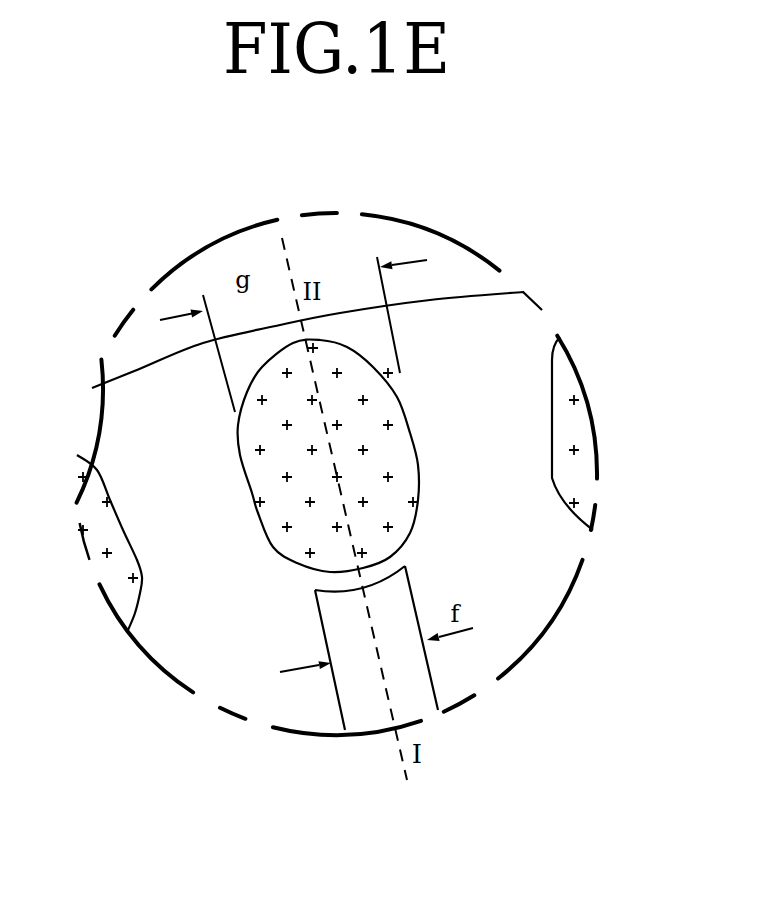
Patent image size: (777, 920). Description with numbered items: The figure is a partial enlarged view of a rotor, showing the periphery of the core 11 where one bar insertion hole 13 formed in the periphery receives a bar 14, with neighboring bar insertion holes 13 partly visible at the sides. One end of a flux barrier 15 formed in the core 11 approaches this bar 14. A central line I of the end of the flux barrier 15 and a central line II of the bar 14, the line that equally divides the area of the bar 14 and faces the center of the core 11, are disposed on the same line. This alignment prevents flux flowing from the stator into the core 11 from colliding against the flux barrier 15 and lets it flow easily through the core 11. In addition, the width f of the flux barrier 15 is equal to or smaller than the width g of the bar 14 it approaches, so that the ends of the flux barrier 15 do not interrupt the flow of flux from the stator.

The core 11 is at (463, 313).
The bar insertion hole 13 is at (252, 493).
The bar 14 is at (300, 532).
The flux barrier 15 is at (343, 703).